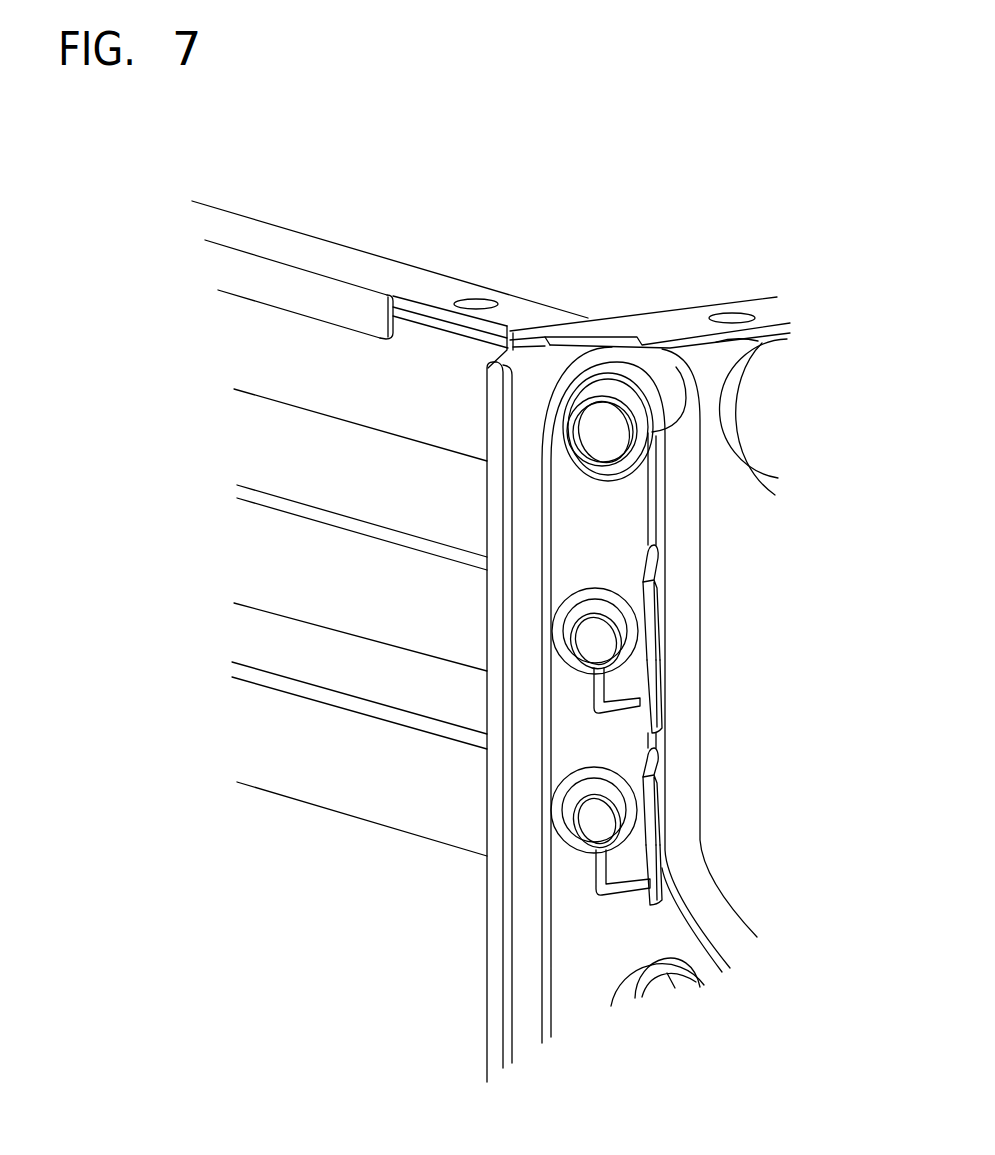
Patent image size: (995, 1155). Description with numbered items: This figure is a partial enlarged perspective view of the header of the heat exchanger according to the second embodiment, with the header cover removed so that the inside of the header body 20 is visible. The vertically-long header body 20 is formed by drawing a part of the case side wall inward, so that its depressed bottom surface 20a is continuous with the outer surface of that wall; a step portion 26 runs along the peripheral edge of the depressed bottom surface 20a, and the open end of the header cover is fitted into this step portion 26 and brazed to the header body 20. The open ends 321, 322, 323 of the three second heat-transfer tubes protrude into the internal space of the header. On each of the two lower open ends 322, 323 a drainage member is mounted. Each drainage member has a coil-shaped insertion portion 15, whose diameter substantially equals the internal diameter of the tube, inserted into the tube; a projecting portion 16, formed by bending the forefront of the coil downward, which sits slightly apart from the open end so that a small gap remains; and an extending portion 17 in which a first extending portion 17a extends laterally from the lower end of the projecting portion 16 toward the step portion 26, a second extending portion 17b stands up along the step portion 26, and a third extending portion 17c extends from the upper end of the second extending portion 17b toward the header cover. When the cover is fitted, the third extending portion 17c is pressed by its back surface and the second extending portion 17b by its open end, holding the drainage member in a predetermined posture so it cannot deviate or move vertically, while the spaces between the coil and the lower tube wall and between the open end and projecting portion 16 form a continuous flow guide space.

The insertion portion 15 is at (626, 603).
The projecting portion 16 is at (597, 710).
The extending portion 17 is at (800, 603).
The first extending portion 17a is at (655, 687).
The second extending portion 17b is at (653, 603).
The third extending portion 17c is at (652, 658).
The header body 20 is at (572, 501).
The depressed bottom surface 20a is at (637, 514).
The step portion 26 is at (680, 373).
The open end 321 is at (585, 422).
The open end 322 is at (558, 635).
The open end 323 is at (558, 805).